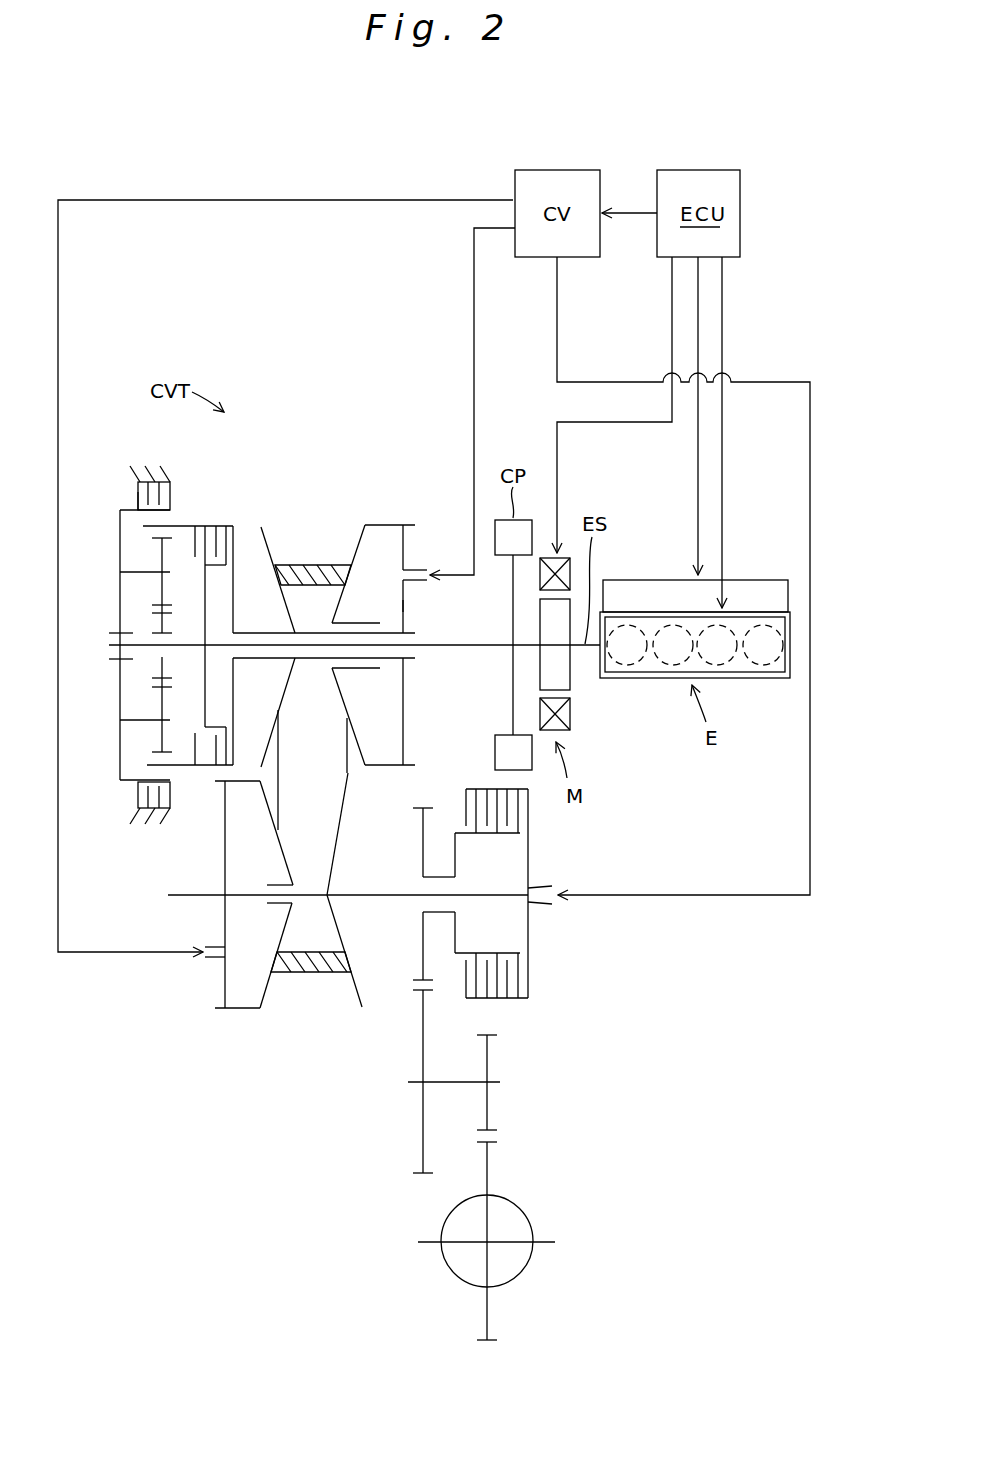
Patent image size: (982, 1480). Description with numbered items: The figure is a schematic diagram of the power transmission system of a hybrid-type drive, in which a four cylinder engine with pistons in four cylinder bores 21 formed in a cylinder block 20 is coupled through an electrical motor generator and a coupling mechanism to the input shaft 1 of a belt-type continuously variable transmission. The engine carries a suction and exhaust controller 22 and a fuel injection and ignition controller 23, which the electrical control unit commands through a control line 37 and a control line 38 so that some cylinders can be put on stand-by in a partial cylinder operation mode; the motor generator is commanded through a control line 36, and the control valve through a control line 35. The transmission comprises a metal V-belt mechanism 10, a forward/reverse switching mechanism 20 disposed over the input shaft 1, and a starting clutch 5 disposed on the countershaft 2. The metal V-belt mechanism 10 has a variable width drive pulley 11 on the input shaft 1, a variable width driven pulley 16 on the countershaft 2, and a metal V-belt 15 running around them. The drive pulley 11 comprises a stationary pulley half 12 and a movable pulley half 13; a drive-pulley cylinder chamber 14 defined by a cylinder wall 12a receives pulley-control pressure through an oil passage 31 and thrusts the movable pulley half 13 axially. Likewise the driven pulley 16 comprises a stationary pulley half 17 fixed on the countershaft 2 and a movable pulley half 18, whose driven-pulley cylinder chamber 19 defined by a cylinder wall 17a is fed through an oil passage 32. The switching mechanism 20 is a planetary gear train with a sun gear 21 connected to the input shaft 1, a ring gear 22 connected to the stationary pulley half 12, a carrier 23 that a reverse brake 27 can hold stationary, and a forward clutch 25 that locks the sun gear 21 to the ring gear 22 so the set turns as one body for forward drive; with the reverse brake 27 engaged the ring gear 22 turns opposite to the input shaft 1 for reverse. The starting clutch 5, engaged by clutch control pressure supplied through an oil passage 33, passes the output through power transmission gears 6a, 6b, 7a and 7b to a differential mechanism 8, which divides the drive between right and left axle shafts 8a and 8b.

The input shaft 1 is at (469, 648).
The countershaft 2 is at (387, 900).
The starting clutch 5 is at (544, 973).
The power transmission gear 6a is at (418, 839).
The power transmission gear 6b is at (417, 1175).
The power transmission gear 7a is at (488, 1060).
The power transmission gear 7b is at (488, 1172).
The differential mechanism 8 is at (452, 1276).
The axle shaft 8a is at (432, 1242).
The axle shaft 8b is at (545, 1240).
The metal V-belt mechanism 10 is at (367, 471).
The variable width drive pulley 11 is at (385, 520).
The stationary pulley half 12 is at (270, 540).
The cylinder wall 12a is at (404, 606).
The movable pulley half 13 is at (355, 540).
The drive-pulley cylinder chamber 14 is at (386, 592).
The metal V-belt 15 is at (348, 768).
The variable width driven pulley 16 is at (275, 1014).
The stationary pulley half 17 is at (355, 995).
The cylinder wall 17a is at (225, 857).
The movable pulley half 18 is at (270, 988).
The driven-pulley cylinder chamber 19 is at (269, 875).
The forward/reverse switching mechanism 20 is at (119, 459).
The sun gear 21 is at (676, 622).
The ring gear 22 is at (745, 612).
The carrier 23 is at (613, 580).
The forward clutch 25 is at (210, 526).
The reverse brake 27 is at (138, 492).
The oil passage 31 is at (474, 313).
The oil passage 32 is at (292, 200).
The oil passage 33 is at (777, 383).
The control line 35 is at (625, 210).
The control line 36 is at (618, 424).
The control line 37 is at (724, 497).
The control line 38 is at (700, 458).